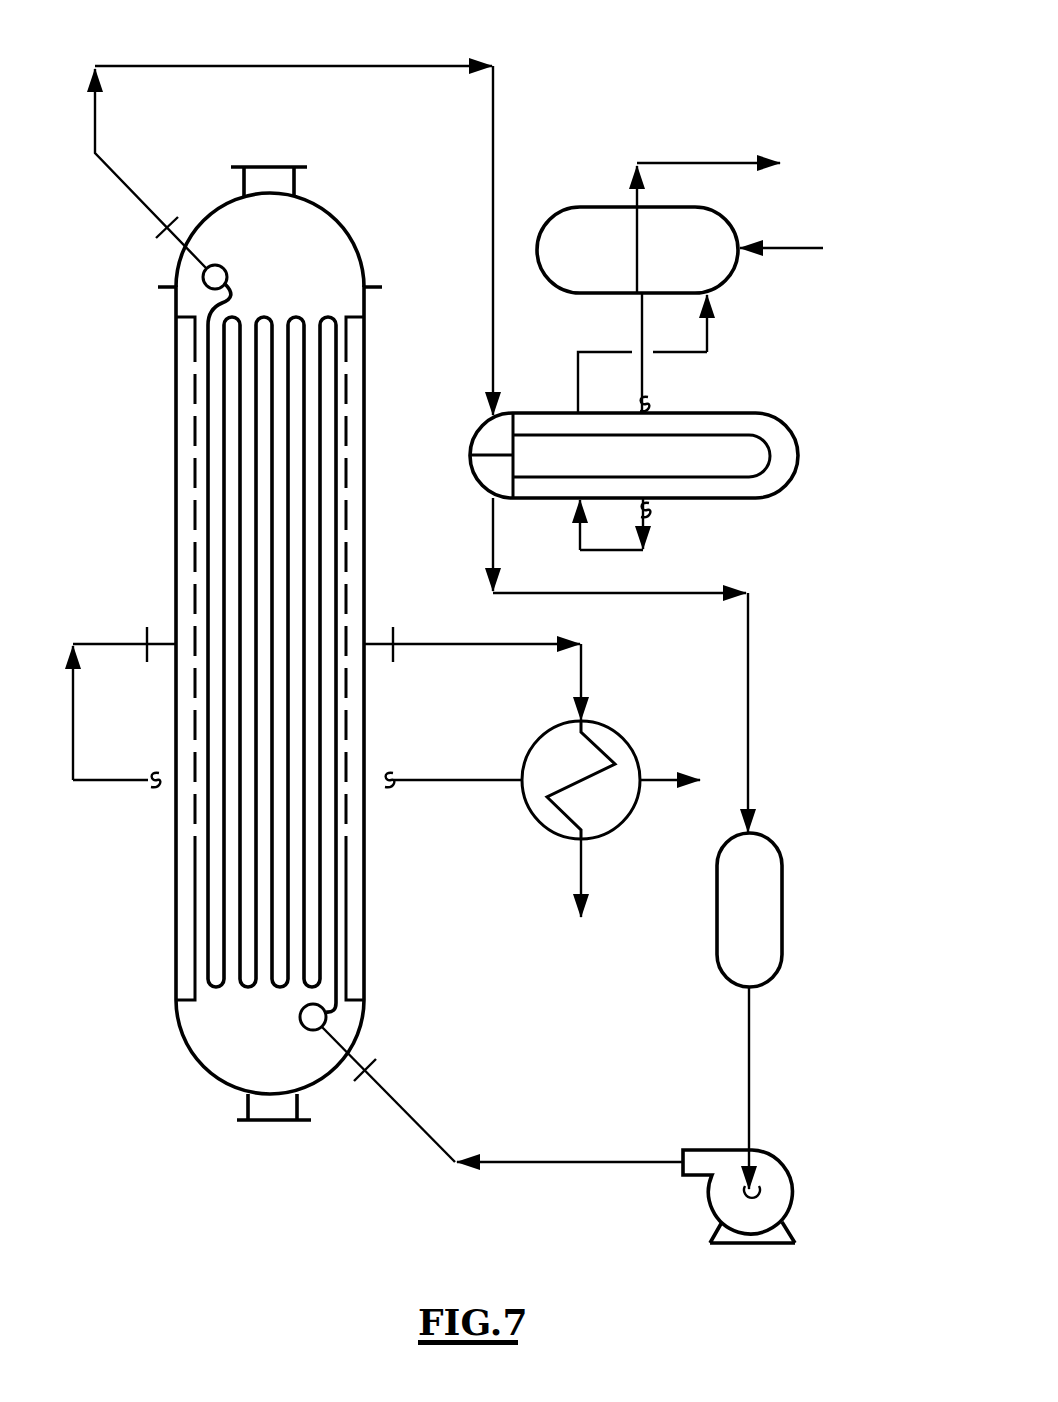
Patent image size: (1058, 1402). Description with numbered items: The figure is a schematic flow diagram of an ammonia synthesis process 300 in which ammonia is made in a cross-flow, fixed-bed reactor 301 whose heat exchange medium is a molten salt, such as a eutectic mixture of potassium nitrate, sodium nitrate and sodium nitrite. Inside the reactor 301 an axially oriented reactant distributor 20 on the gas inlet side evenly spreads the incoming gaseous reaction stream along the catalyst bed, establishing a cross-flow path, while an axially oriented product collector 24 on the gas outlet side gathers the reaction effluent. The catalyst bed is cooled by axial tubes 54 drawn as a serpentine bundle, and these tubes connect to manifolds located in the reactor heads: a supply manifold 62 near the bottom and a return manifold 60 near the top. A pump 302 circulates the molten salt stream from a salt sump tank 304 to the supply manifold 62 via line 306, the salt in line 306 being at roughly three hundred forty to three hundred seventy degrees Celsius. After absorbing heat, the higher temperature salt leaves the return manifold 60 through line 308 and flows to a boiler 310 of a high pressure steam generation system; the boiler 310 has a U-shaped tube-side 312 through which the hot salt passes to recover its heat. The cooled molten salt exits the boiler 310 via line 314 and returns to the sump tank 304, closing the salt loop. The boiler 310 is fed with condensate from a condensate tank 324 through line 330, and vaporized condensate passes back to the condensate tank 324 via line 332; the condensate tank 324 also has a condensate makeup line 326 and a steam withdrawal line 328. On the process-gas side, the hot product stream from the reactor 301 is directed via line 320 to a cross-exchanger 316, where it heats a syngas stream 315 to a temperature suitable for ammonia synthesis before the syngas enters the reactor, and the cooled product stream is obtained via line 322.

The ammonia synthesis process 300 is at (215, 1207).
The cross-flow, fixed-bed reactor 301 is at (177, 908).
The reactant distributor 20 is at (193, 540).
The product collector 24 is at (352, 540).
The axial tubes 54 is at (323, 918).
The return manifold 60 is at (216, 265).
The supply manifold 62 is at (327, 1010).
The line 308 is at (280, 65).
The line 320 is at (533, 646).
The cross-exchanger 316 is at (612, 728).
The syngas stream 315 is at (655, 778).
The line 322 is at (583, 872).
The condensate tank 324 is at (715, 207).
The steam withdrawal line 328 is at (712, 163).
The condensate makeup line 326 is at (793, 248).
The line 330 is at (642, 340).
The line 332 is at (708, 322).
The boiler 310 is at (718, 413).
The U-shaped tube-side 312 is at (775, 448).
The line 314 is at (697, 593).
The salt sump tank 304 is at (782, 915).
The pump 302 is at (790, 1172).
The line 306 is at (510, 1160).